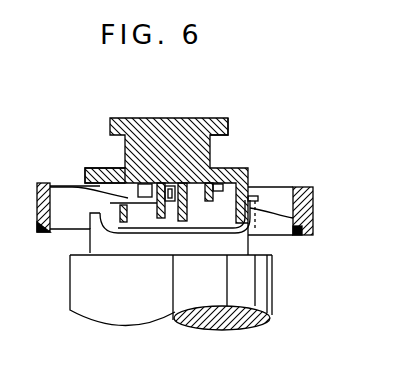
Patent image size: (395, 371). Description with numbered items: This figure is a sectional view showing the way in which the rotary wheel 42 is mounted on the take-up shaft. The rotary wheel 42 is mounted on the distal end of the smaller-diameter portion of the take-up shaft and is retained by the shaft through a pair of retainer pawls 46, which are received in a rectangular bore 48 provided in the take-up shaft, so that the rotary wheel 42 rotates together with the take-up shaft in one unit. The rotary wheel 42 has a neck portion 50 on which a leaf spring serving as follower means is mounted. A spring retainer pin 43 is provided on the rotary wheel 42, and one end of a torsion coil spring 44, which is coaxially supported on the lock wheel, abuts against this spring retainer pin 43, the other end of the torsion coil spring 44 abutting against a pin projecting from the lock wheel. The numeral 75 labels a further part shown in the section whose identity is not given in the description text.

The rotary wheel 42 is at (287, 115).
The spring retainer pin 43 is at (316, 214).
The torsion coil spring 44 is at (84, 187).
The retainer pawls 46 is at (155, 216).
The rectangular bore 48 is at (135, 229).
The neck portion 50 is at (210, 153).
The flange 75 is at (230, 127).